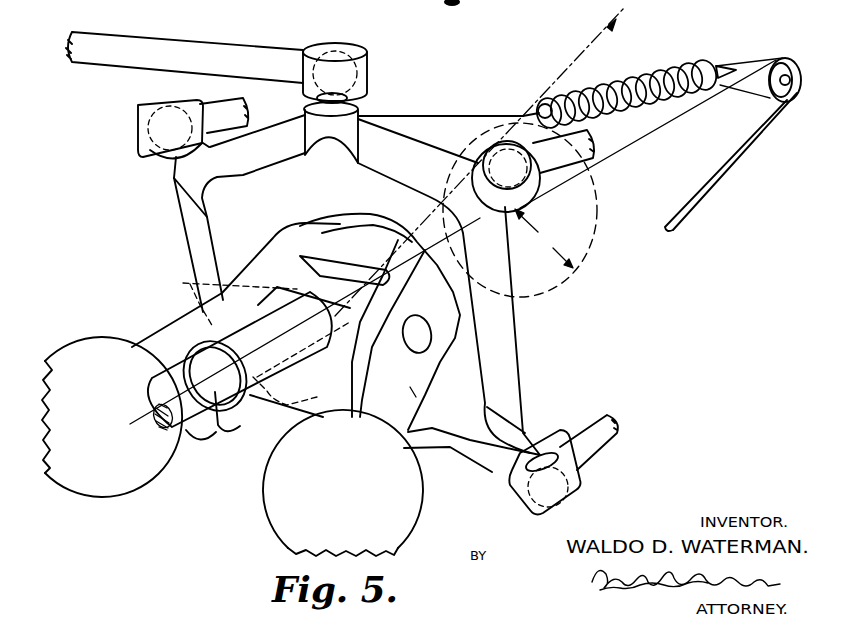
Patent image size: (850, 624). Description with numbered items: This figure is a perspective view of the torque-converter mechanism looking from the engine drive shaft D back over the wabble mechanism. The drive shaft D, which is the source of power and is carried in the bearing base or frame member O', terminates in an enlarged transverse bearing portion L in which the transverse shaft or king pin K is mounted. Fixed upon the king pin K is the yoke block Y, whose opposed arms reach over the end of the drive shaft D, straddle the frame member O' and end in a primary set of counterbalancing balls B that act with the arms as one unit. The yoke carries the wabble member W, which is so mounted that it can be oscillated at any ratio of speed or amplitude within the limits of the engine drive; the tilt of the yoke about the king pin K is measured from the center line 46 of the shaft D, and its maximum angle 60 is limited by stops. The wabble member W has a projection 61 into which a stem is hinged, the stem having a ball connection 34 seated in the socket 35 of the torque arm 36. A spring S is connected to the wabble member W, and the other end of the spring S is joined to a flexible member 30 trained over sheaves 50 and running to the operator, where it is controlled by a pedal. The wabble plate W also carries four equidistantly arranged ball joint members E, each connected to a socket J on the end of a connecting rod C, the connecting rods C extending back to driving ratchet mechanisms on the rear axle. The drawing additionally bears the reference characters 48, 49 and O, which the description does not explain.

The torque arm 36 is at (135, 41).
The socket 35 is at (266, 48).
The ball connection 34 is at (340, 55).
The projection 61 is at (347, 127).
The wabble member W is at (440, 123).
The sockets J is at (497, 141).
The connecting rods C is at (567, 158).
The spring S is at (680, 67).
The maximum angle 60 is at (628, 66).
The center line of the shaft 46 is at (653, 122).
The sheaves 50 is at (795, 68).
The flexible member 30 is at (765, 70).
The circle of motion 48 is at (595, 230).
The radius 49 is at (544, 238).
The transverse shaft K is at (383, 322).
The yoke block Y is at (413, 390).
The transverse bearing portion L is at (283, 283).
The engine drive shaft D is at (214, 392).
The pivot point O is at (301, 378).
The bearing base member O' is at (232, 289).
The counter balancing balls B is at (265, 490).
The ball joint members E is at (532, 451).